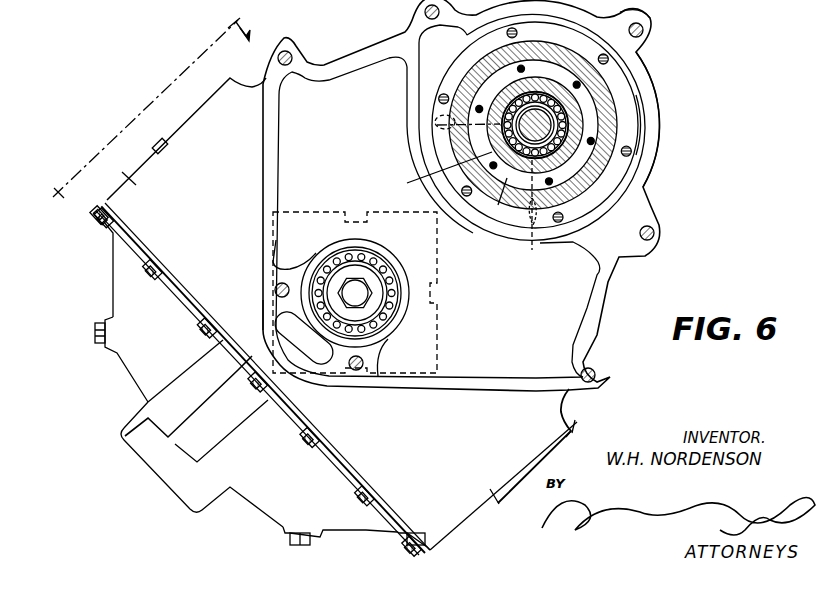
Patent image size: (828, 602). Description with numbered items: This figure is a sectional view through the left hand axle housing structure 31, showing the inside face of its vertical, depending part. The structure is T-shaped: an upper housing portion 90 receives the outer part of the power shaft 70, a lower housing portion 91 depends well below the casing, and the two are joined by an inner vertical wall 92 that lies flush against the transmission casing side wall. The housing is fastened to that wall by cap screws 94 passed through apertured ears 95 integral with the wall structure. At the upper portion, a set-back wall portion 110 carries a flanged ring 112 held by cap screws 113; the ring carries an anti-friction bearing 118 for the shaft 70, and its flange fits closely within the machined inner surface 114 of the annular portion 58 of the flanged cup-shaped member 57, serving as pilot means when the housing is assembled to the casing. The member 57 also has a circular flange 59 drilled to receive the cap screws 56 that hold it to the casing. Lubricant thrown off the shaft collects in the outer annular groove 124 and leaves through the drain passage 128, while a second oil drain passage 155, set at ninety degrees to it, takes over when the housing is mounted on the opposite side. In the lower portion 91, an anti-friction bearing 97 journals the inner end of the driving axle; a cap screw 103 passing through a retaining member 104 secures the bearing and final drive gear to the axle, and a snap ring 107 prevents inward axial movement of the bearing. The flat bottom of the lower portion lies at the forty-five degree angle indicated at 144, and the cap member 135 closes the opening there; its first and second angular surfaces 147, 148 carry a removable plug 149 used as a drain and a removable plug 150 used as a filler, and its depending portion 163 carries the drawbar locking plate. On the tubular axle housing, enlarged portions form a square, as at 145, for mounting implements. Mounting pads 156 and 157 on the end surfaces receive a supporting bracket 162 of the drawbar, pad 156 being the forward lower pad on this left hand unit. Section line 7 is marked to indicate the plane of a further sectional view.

The section line 7- 7 is at (145, 100).
The left hand axle housing structure 31 is at (656, 176).
The cap screws 56 is at (557, 222).
The flanged cup-shaped member 57 is at (624, 97).
The annular portion 58 is at (618, 128).
The circular flange 59 is at (638, 110).
The power shaft 70 is at (527, 118).
The upper housing portion 90 is at (648, 75).
The lower housing portion 91 is at (118, 174).
The inner vertical wall 92 is at (590, 327).
The cap screws 94 is at (428, 7).
The apertured ears 95 is at (650, 30).
The anti-friction bearing 97 is at (338, 260).
The cap screw 103 is at (360, 290).
The retaining member 104 is at (358, 272).
The snap ring 107 is at (387, 325).
The set-back wall portion 110 is at (495, 82).
The flanged ring 112 is at (554, 74).
The cap screws 113 is at (552, 184).
The machined inner surface 114 is at (557, 62).
The anti-friction bearing 118 is at (435, 172).
The outer annular groove 124 is at (492, 199).
The drain passage 128 is at (527, 251).
The cap member 135 is at (113, 285).
The forty-five degree angle 144 is at (348, 462).
The square enlarged portions 145 is at (437, 332).
The first angular surface 147 is at (353, 533).
The second angular surface 148 is at (113, 253).
The removable plug 149 is at (288, 540).
The removable plug 150 is at (95, 328).
The second oil drain passage 155 is at (440, 128).
The mounting pad 156 is at (578, 424).
The mounting pad 157 is at (207, 100).
The supporting bracket 162 is at (570, 440).
The depending portion 163 is at (160, 468).